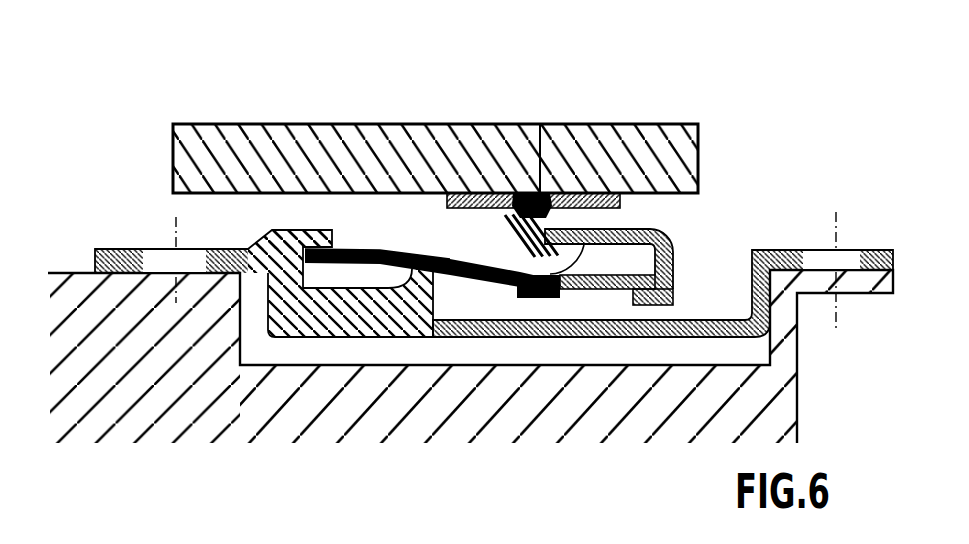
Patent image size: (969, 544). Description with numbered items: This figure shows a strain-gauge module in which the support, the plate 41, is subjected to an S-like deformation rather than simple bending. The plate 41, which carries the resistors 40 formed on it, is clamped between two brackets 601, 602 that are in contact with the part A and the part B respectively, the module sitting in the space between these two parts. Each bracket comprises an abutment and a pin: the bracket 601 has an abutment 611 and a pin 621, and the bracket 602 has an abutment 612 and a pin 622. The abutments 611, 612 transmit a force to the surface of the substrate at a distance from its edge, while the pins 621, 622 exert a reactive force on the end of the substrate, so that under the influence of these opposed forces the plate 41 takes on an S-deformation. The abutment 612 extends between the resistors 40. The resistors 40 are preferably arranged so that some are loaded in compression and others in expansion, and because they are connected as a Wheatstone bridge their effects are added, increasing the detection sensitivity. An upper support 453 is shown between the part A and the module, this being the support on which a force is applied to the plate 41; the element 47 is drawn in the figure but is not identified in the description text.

The part A is at (173, 160).
The part B is at (72, 274).
The upper support 453 is at (540, 127).
The contact projection 47 is at (503, 215).
The plate 41 is at (352, 249).
The resistors 40 is at (388, 288).
The bracket 601 is at (658, 240).
The bracket 602 is at (333, 288).
The abutment 611 is at (628, 228).
The abutment 612 is at (417, 275).
The pin 621 is at (648, 305).
The pin 622 is at (305, 228).